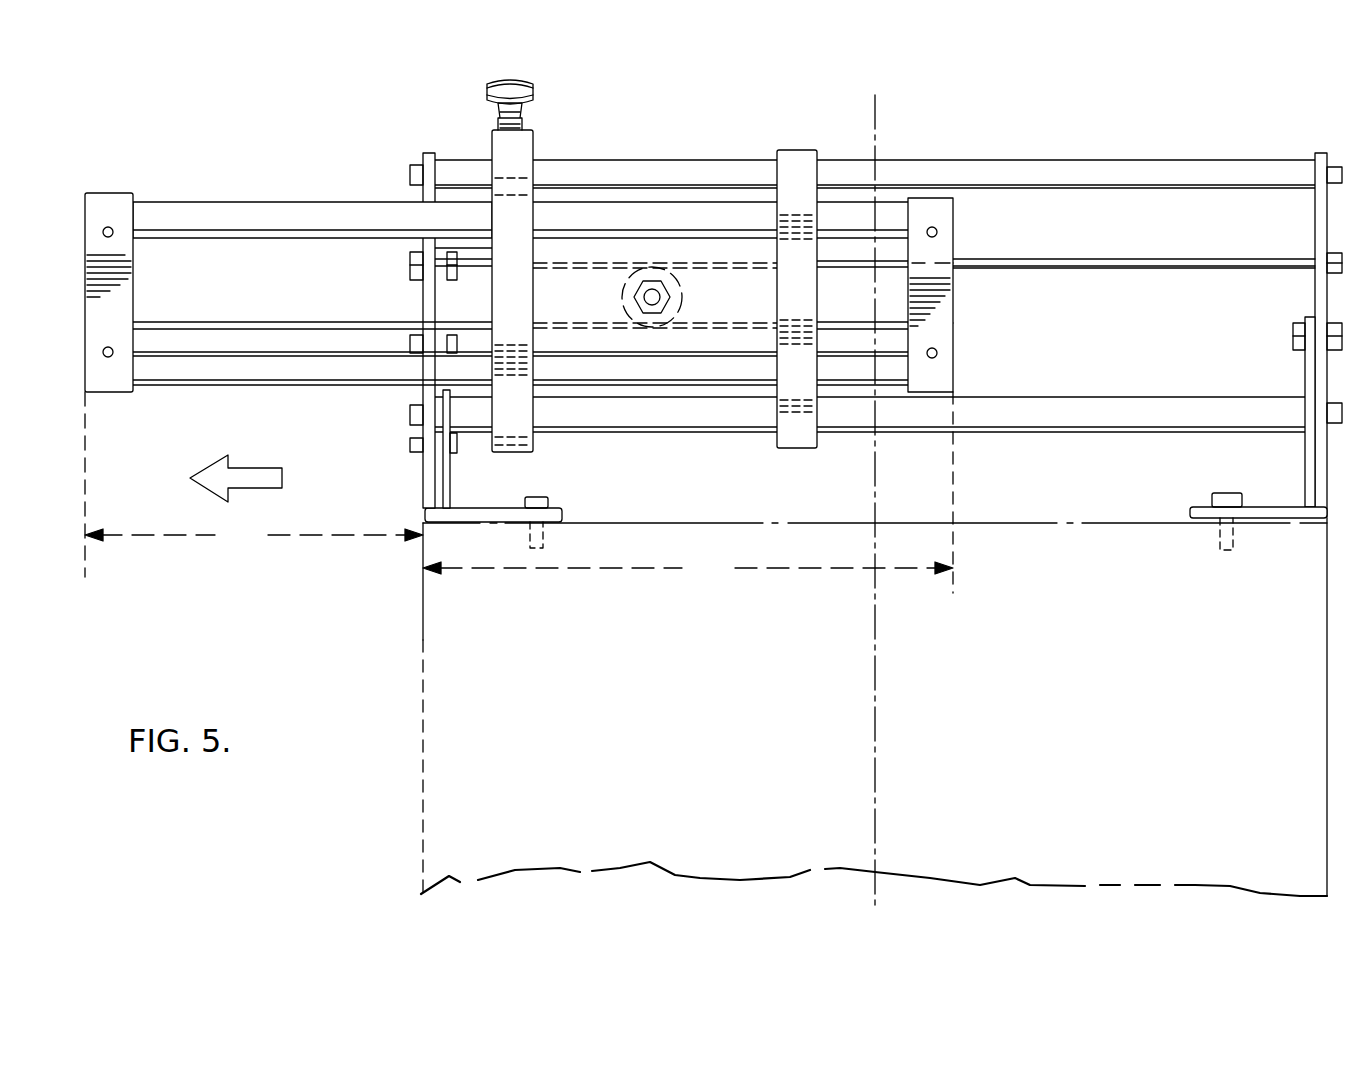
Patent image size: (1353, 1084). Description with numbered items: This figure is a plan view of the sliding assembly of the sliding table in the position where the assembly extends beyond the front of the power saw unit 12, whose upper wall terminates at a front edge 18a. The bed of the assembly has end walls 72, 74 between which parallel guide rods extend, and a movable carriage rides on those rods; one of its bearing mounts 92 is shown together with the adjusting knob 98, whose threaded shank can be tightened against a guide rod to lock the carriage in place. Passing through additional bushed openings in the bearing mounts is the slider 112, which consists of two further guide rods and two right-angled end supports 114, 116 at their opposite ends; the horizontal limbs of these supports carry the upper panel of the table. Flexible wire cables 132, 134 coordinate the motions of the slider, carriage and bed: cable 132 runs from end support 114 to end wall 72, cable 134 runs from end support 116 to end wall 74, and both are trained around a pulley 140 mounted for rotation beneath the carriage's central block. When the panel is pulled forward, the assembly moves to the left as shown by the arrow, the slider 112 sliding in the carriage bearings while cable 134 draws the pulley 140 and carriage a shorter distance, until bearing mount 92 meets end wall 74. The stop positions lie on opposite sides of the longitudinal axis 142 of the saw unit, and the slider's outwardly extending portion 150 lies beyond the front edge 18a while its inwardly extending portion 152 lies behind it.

The power saw unit 12 is at (423, 615).
The front edge of the upper wall 18a is at (423, 797).
The end wall 72 is at (1315, 215).
The end wall 74 is at (423, 157).
The bearing mount 92 is at (534, 142).
The adjusting knob 98 is at (512, 80).
The slider 112 is at (240, 202).
The end support 114 is at (955, 314).
The end support 116 is at (86, 193).
The flexible wire cable 132 is at (1130, 268).
The flexible wire cable 134 is at (308, 322).
The pulley 140 is at (670, 297).
The longitudinal axis 142 is at (883, 506).
The outwardly extending portion of the slider 150 is at (254, 484).
The inwardly extending portion of the slider 152 is at (688, 569).